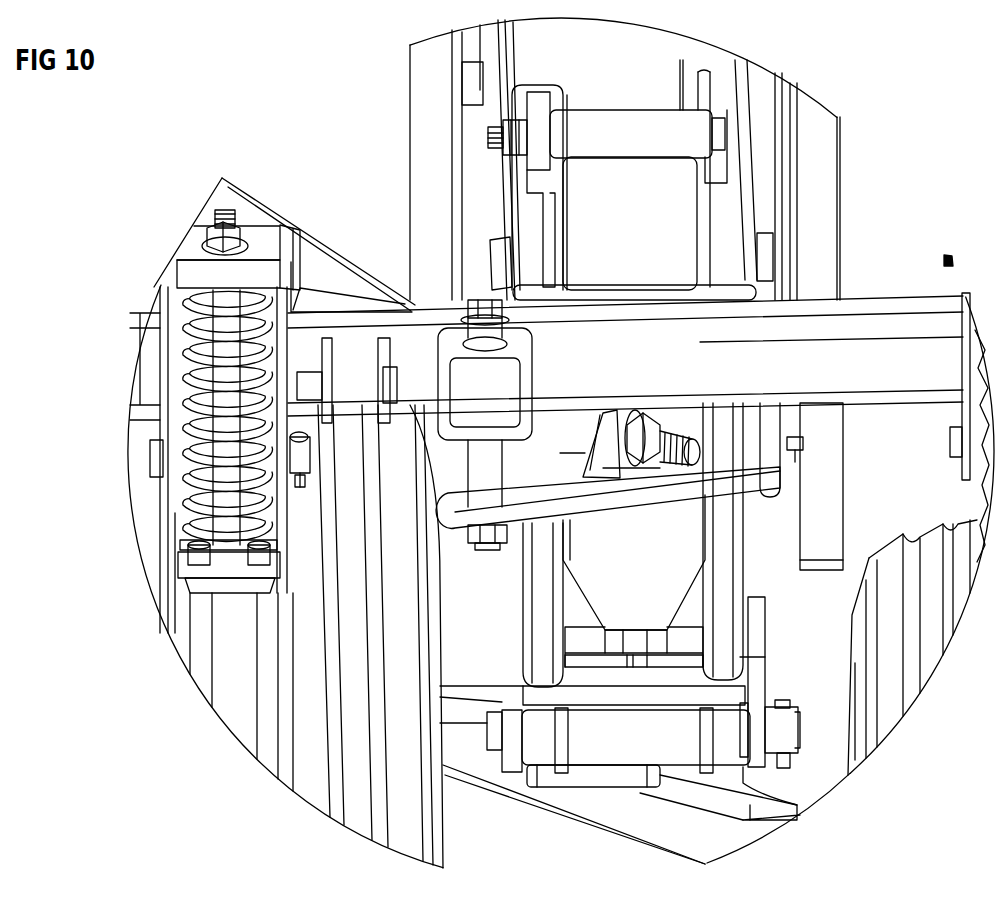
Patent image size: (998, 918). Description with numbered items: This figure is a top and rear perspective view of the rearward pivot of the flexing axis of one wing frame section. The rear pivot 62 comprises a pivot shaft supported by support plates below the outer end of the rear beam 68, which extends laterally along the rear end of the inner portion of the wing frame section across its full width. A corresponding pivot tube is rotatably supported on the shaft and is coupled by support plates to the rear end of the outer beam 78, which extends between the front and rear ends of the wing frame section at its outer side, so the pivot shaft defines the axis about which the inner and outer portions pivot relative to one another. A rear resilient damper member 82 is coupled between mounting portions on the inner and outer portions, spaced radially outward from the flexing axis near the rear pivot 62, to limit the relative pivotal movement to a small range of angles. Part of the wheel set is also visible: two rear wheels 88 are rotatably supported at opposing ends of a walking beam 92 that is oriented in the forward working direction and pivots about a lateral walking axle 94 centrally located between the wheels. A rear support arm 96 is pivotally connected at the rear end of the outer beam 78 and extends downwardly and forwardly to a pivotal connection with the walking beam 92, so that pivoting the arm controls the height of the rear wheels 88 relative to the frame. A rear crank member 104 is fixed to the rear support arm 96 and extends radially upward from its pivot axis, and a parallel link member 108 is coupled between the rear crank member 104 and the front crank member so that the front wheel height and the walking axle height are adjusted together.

The rear pivot 62 is at (690, 453).
The rear beam 68 is at (868, 345).
The outer beam 78 is at (733, 230).
The rear resilient damper member 82 is at (493, 397).
The rear wheels 88 is at (413, 594).
The walking beam 92 is at (630, 825).
The mounting bracket 94 is at (780, 736).
The rear support arm 96 is at (733, 630).
The rear crank member 104 is at (680, 217).
The parallel link member 108 is at (530, 65).